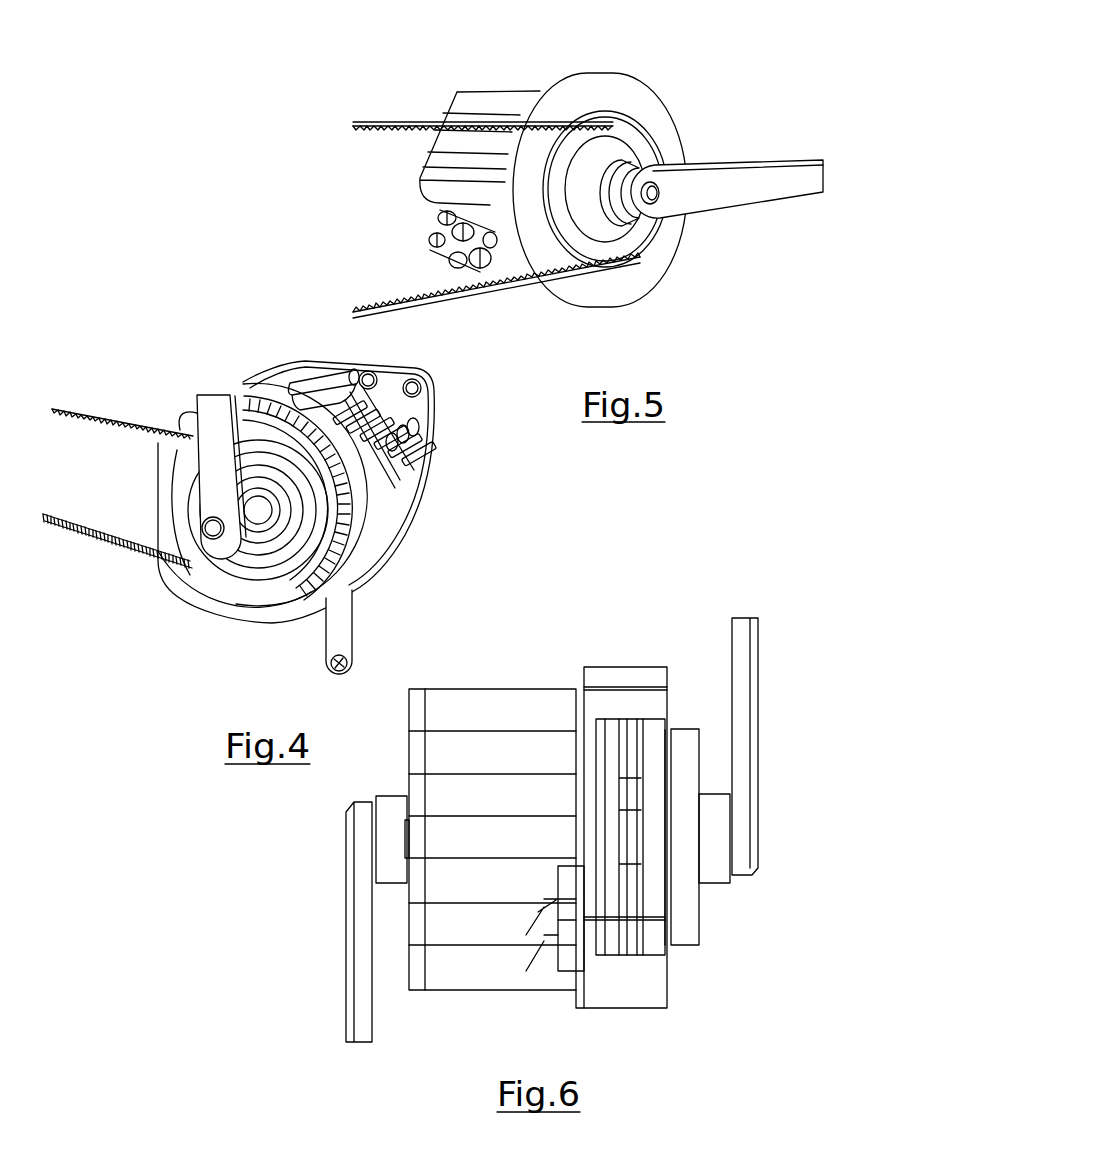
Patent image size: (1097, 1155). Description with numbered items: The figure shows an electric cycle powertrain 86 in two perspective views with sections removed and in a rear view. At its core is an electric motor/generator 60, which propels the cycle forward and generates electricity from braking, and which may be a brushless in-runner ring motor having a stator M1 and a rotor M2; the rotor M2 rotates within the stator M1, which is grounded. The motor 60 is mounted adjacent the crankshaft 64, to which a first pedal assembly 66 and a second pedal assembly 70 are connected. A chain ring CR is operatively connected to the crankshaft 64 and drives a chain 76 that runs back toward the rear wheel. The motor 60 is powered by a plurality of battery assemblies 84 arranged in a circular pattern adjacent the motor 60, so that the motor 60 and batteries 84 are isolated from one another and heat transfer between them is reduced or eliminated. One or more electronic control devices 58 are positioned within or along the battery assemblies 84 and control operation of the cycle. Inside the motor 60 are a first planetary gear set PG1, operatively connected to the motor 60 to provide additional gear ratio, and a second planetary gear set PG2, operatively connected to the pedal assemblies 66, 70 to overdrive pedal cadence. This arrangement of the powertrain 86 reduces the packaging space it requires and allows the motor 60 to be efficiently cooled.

In FIG. 5, the electronic control device 58 is at (440, 243).
In FIG. 4, the electronic control device 58 is at (390, 377).
In FIG. 5, the electric motor/generator 60 is at (567, 304).
In FIG. 4, the electric motor/generator 60 is at (361, 500).
In FIG. 6, the electric motor/generator 60 is at (631, 667).
In FIG. 5, the crankshaft 64 is at (655, 200).
In FIG. 4, the crankshaft 64 is at (213, 528).
In FIG. 6, the crankshaft 64 is at (765, 833).
In FIG. 4, the first pedal assembly 66 is at (340, 637).
In FIG. 6, the first pedal assembly 66 is at (744, 745).
In FIG. 5, the second pedal assembly 70 is at (733, 163).
In FIG. 4, the second pedal assembly 70 is at (203, 437).
In FIG. 6, the second pedal assembly 70 is at (362, 931).
In FIG. 5, the chain 76 is at (400, 122).
In FIG. 4, the chain 76 is at (104, 418).
In FIG. 5, the battery assembly 84 is at (487, 97).
In FIG. 4, the battery assembly 84 is at (330, 388).
In FIG. 6, the battery assembly 84 is at (493, 705).
In FIG. 5, the electronic cycle powertrain 86 is at (637, 241).
In FIG. 4, the electronic cycle powertrain 86 is at (267, 478).
In FIG. 6, the electronic cycle powertrain 86 is at (613, 957).
In FIG. 5, the chain ring CR is at (637, 123).
In FIG. 4, the chain ring CR is at (298, 555).
In FIG. 6, the chain ring CR is at (699, 925).
In FIG. 4, the stator M1 is at (360, 527).
In FIG. 6, the stator M1 is at (659, 1005).
In FIG. 4, the rotor M2 is at (297, 563).
In FIG. 6, the first planetary gear set PG1 is at (613, 945).
In FIG. 6, the second planetary gear set PG2 is at (653, 937).